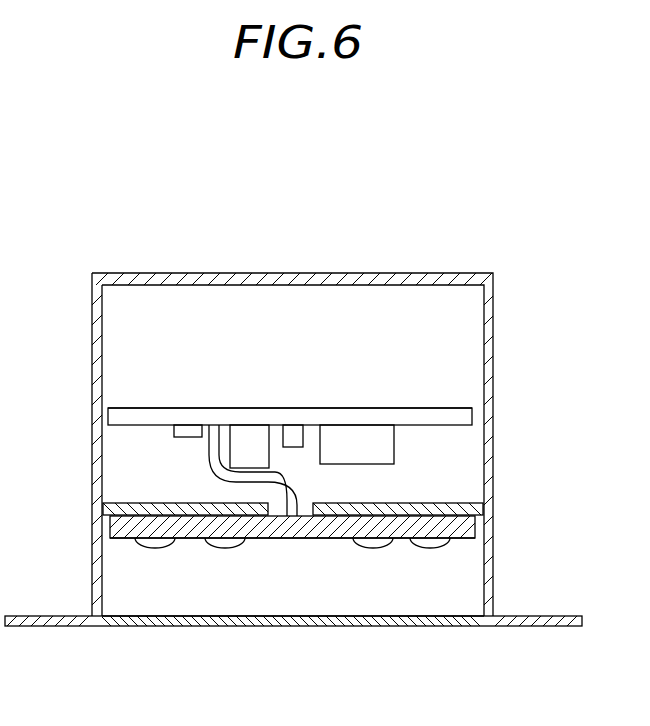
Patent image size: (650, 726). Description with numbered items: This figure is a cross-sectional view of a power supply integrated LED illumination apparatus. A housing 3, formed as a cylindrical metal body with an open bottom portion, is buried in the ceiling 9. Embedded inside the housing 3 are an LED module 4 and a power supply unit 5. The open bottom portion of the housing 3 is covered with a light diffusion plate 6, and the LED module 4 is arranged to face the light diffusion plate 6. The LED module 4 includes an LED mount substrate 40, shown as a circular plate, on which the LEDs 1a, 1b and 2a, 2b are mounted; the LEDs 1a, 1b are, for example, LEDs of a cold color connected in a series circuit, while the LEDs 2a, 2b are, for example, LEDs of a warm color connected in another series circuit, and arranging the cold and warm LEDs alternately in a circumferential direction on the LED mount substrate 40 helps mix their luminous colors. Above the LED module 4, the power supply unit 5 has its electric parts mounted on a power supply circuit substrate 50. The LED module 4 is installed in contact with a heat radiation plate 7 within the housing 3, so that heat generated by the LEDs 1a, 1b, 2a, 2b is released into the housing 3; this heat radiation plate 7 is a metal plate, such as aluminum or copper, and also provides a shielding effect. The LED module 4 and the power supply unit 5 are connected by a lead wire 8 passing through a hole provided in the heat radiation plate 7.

The housing 3 is at (97, 300).
The power supply unit 5 is at (358, 398).
The power supply circuit substrate 50 is at (472, 413).
The lead wire 8 is at (210, 460).
The heat radiation plate 7 is at (103, 508).
The LED mount substrate 40 is at (475, 528).
The LED 1a is at (155, 548).
The LED 1b is at (175, 670).
The LED 2a is at (376, 548).
The LED 2b is at (405, 670).
The LED module 4 is at (284, 553).
The light diffusion plate 6 is at (327, 627).
The ceiling 9 is at (543, 627).